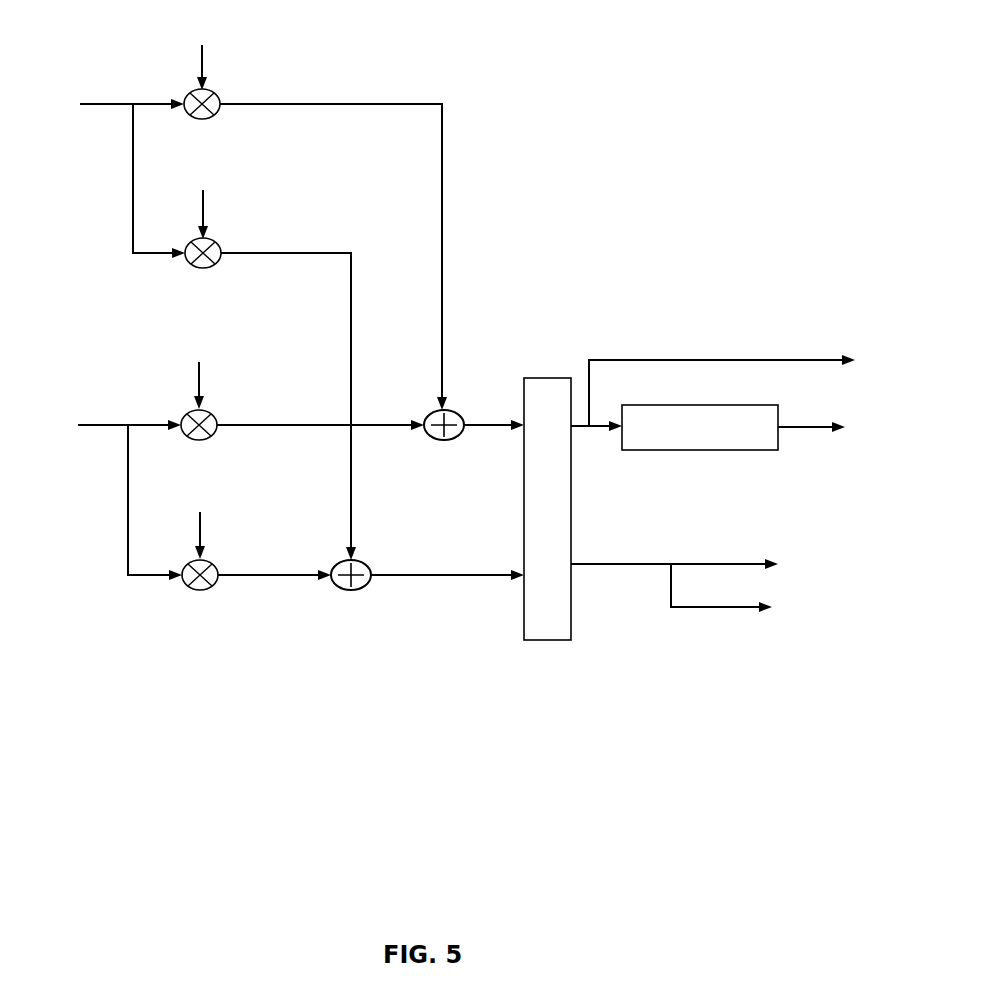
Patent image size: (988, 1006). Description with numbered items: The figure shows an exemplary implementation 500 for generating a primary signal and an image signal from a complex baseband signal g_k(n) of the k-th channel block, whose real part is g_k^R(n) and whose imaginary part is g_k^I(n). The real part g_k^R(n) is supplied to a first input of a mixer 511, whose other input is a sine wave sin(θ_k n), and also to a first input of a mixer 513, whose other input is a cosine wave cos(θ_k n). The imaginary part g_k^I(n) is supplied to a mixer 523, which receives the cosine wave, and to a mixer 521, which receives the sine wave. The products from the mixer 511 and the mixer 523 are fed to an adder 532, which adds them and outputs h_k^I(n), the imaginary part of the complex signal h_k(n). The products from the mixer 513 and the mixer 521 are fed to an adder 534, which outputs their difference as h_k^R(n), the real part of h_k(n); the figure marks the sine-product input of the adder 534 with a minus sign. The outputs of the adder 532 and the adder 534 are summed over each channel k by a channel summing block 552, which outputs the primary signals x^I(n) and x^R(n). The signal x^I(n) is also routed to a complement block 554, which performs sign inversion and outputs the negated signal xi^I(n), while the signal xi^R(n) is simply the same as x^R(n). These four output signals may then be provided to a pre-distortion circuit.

The signal processing system / mixing and summing structure 500 is at (446, 468).
The mixer 511 is at (216, 66).
The mixer 513 is at (220, 215).
The mixer 521 is at (216, 537).
The mixer 523 is at (213, 386).
The adder 532 is at (430, 411).
The adder 534 is at (341, 588).
The channel summing 552 is at (547, 493).
The complement block 554 is at (700, 412).